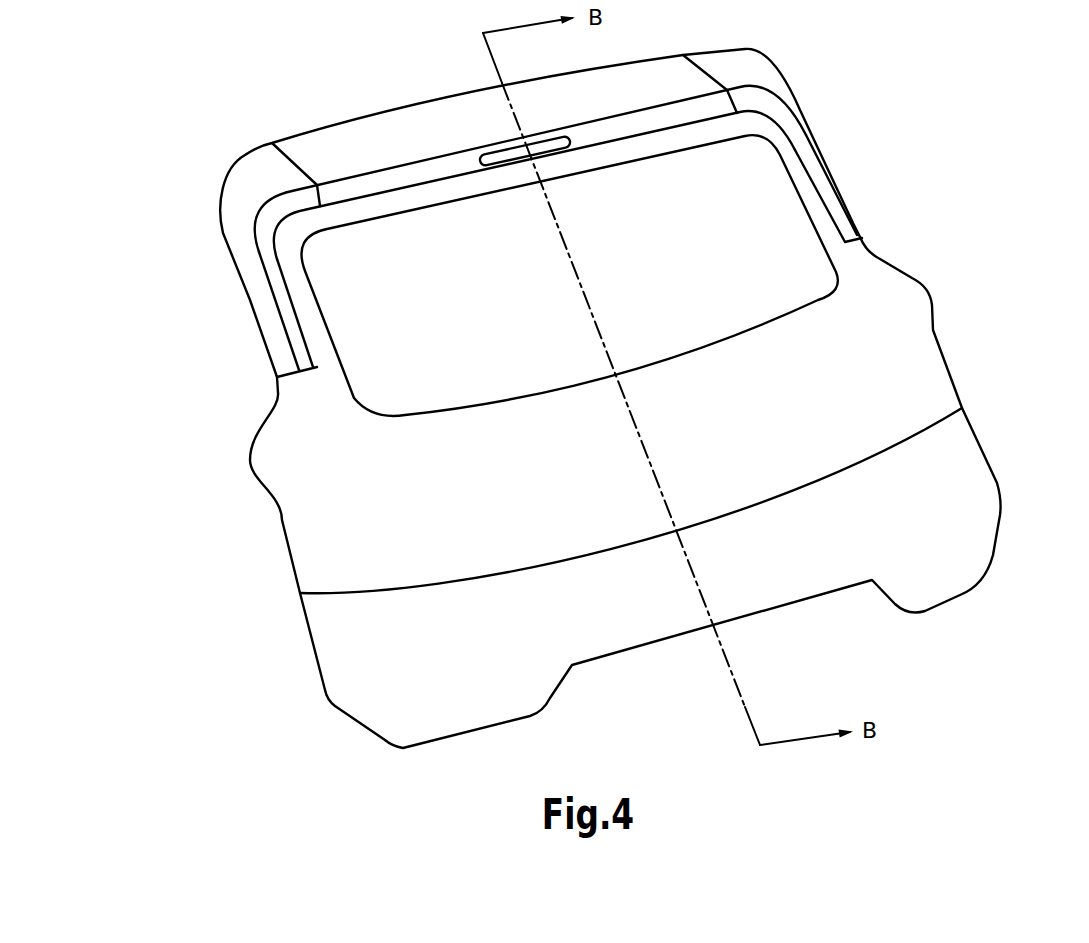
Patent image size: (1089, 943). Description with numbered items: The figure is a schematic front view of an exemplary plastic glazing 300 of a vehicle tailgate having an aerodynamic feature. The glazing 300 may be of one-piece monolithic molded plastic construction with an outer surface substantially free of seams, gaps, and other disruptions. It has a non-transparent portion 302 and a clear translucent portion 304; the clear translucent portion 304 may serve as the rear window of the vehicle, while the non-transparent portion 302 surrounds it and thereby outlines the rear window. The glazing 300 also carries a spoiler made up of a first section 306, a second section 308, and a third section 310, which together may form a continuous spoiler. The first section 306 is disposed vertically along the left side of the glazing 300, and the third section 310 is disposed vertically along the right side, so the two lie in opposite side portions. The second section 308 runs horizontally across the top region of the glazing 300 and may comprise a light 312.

The plastic glazing 300 is at (618, 398).
The non-transparent portion 302 is at (865, 275).
The clear translucent portion 304 is at (742, 192).
The first section 306 is at (296, 347).
The second section 308 is at (400, 128).
The third section 310 is at (842, 220).
The light 312 is at (510, 157).